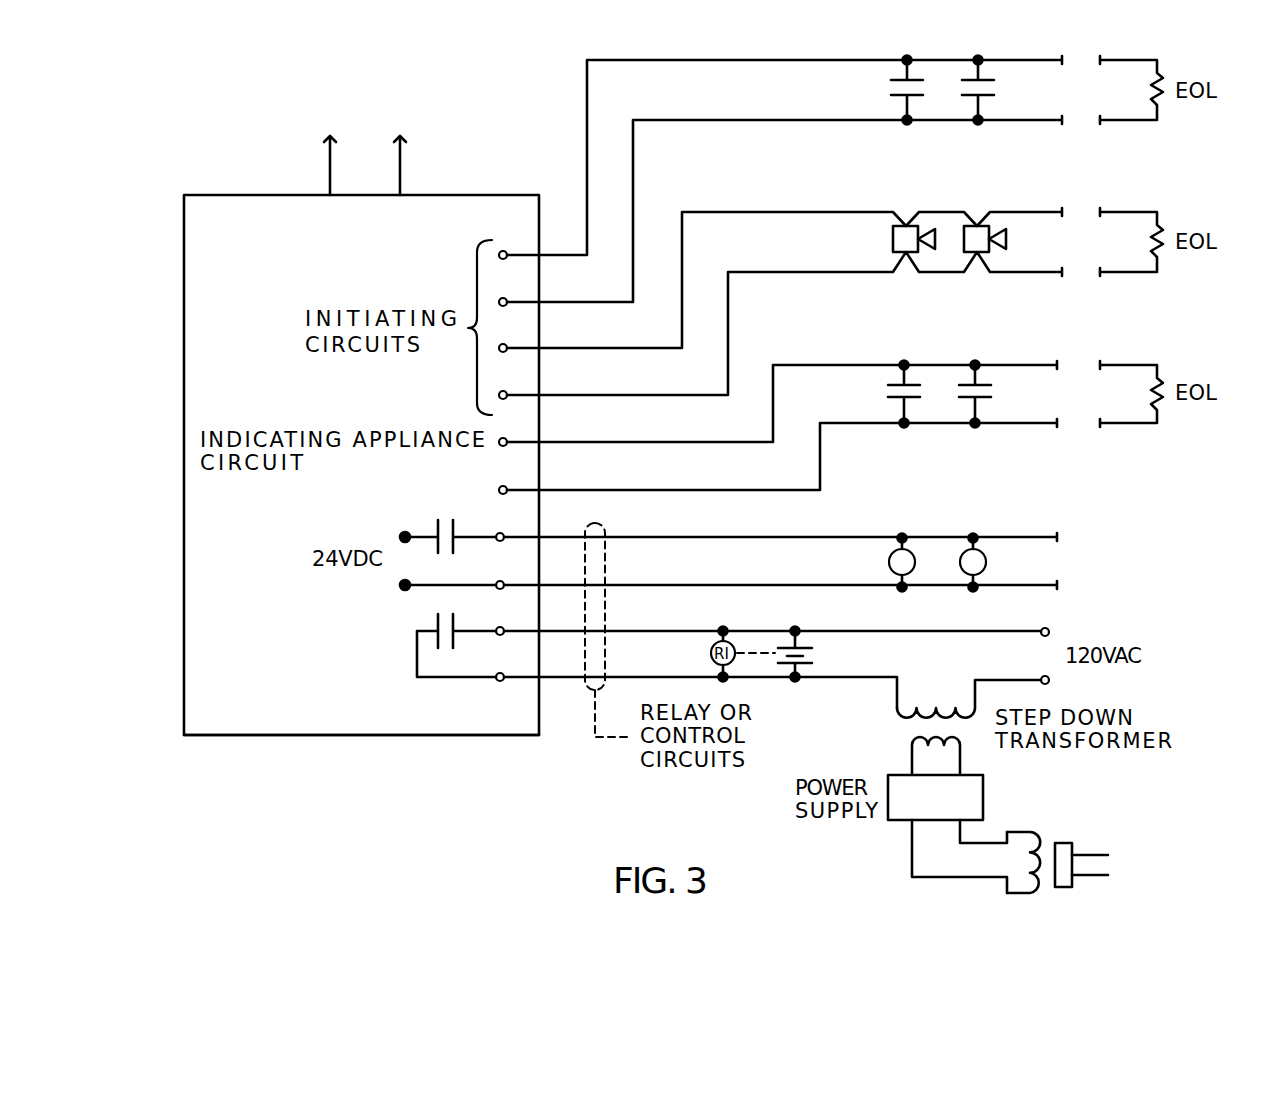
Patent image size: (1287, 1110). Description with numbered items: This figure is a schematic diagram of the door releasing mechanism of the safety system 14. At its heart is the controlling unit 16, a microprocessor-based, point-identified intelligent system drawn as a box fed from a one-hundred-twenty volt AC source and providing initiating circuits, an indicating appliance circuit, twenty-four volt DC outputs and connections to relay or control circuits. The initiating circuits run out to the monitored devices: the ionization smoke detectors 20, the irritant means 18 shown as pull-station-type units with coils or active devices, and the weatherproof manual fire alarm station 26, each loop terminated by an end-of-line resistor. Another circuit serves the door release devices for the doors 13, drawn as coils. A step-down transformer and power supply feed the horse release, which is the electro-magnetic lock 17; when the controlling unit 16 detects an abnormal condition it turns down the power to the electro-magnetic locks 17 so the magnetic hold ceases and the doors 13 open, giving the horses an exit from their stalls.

The safety system 14 is at (236, 192).
The controlling unit 16 is at (212, 722).
The detectors 20 is at (914, 43).
The irritant means 18 is at (977, 210).
The weatherproof manual fire alarm station 26 is at (968, 347).
The doors 13 is at (958, 515).
The electro-magnetic locks 17 is at (1050, 832).